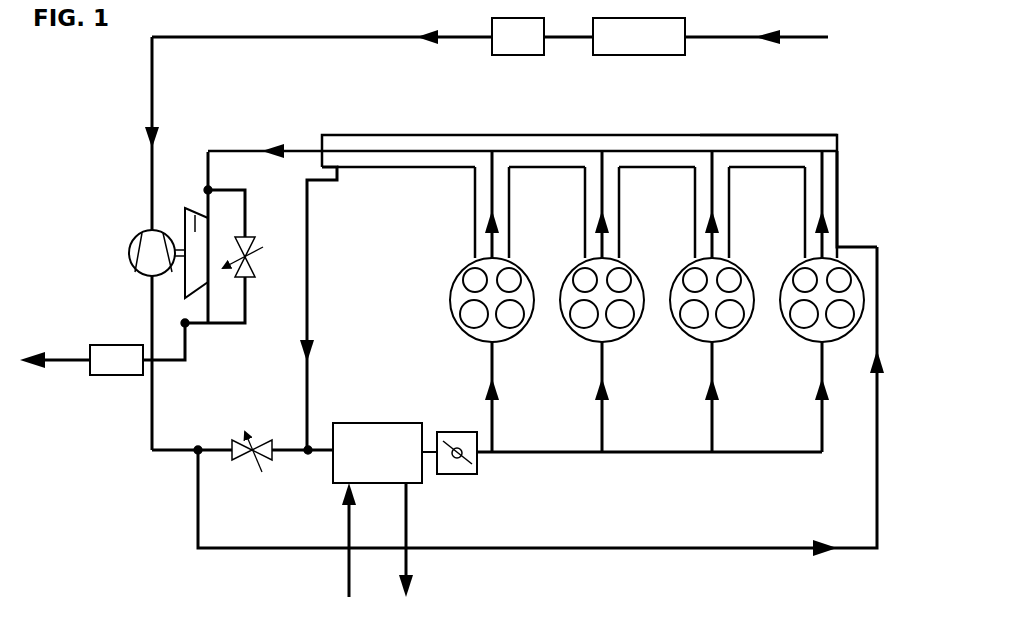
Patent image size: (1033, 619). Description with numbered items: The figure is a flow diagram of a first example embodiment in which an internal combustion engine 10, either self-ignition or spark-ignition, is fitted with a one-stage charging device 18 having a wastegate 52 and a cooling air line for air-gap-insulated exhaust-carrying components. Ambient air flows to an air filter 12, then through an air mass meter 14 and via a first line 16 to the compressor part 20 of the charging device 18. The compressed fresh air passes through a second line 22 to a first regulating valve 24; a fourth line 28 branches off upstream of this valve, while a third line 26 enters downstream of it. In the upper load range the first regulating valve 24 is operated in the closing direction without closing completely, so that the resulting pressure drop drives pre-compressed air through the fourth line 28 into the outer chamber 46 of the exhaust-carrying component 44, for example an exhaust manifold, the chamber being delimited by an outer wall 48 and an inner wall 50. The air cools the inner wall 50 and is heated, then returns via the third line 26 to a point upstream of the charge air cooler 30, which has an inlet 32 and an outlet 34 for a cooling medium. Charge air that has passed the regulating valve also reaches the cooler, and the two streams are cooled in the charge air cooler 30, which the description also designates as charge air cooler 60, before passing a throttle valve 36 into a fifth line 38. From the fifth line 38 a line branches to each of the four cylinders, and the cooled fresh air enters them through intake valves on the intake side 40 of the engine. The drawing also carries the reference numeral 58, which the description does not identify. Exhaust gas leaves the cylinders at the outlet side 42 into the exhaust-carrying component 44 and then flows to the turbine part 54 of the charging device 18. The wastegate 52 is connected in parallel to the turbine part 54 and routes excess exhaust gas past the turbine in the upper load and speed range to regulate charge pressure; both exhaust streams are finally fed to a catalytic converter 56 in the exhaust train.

The internal combustion engine 10 is at (631, 304).
The air filter 12 is at (640, 48).
The air mass meter 14 is at (518, 48).
The first line 16 is at (250, 40).
The charging device 18 is at (172, 228).
The compressor part 20 is at (148, 243).
The second line 22 is at (152, 300).
The first regulating valve 24 is at (232, 448).
The third line 26 is at (308, 285).
The fourth line 28 is at (740, 545).
The charge air cooler 30 is at (378, 470).
The inlet 32 is at (349, 562).
The outlet 34 is at (406, 565).
The throttle valve 36 is at (457, 466).
The fifth line 38 is at (653, 455).
The intake side 40 is at (631, 309).
The outlet side 42 is at (454, 103).
The exhaust-carrying component 44 is at (772, 133).
The outer chamber 46 is at (705, 140).
The outer wall 48 is at (357, 135).
The inner wall 50 is at (552, 150).
The wastegate 52 is at (250, 240).
The turbine part 54 is at (198, 225).
The catalytic converter 56 is at (118, 365).
The exhaust valves 58 is at (478, 316).
The charge air cooler 60 is at (470, 272).